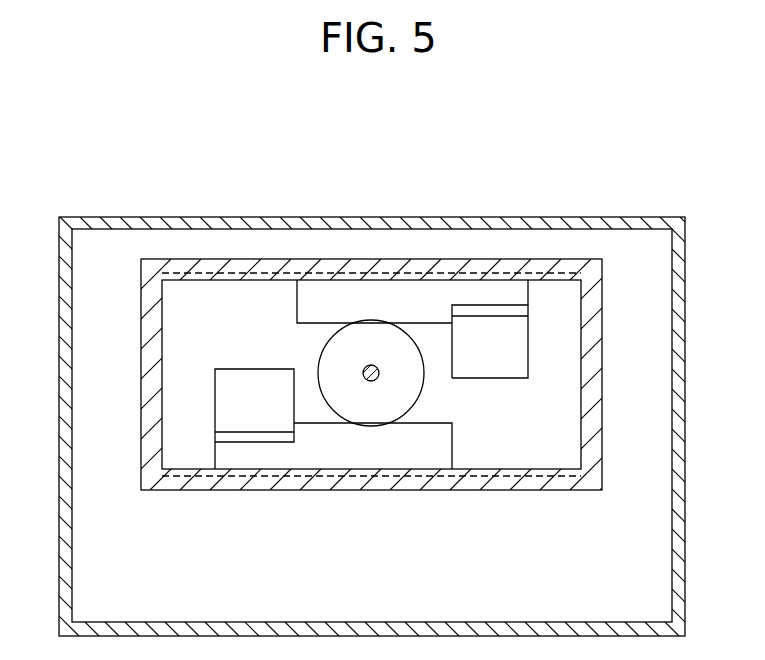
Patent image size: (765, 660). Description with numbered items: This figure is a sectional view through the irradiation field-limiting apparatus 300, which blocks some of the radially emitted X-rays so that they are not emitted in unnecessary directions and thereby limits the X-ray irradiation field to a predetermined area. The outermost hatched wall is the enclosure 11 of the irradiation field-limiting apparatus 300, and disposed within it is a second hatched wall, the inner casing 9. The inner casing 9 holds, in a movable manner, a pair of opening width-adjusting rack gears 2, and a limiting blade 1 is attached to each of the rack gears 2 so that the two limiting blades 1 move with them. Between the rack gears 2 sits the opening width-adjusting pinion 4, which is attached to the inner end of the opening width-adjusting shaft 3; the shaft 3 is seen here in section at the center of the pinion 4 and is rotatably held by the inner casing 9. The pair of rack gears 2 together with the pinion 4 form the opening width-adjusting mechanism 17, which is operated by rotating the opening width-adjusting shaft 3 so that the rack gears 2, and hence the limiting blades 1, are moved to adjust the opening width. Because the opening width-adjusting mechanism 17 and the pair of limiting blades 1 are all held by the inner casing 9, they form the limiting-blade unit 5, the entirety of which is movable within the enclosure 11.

The irradiation field-limiting apparatus 300 is at (478, 109).
The enclosure 11 is at (240, 217).
The limiting-blade unit 5 is at (382, 369).
The inner casing 9 is at (594, 305).
The opening width-adjusting rack gear 2 is at (355, 300).
The limiting blade 1 is at (244, 390).
The opening width-adjusting shaft 3 is at (367, 381).
The opening width-adjusting pinion 4 is at (330, 393).
The opening width-adjusting mechanism 17 is at (371, 381).